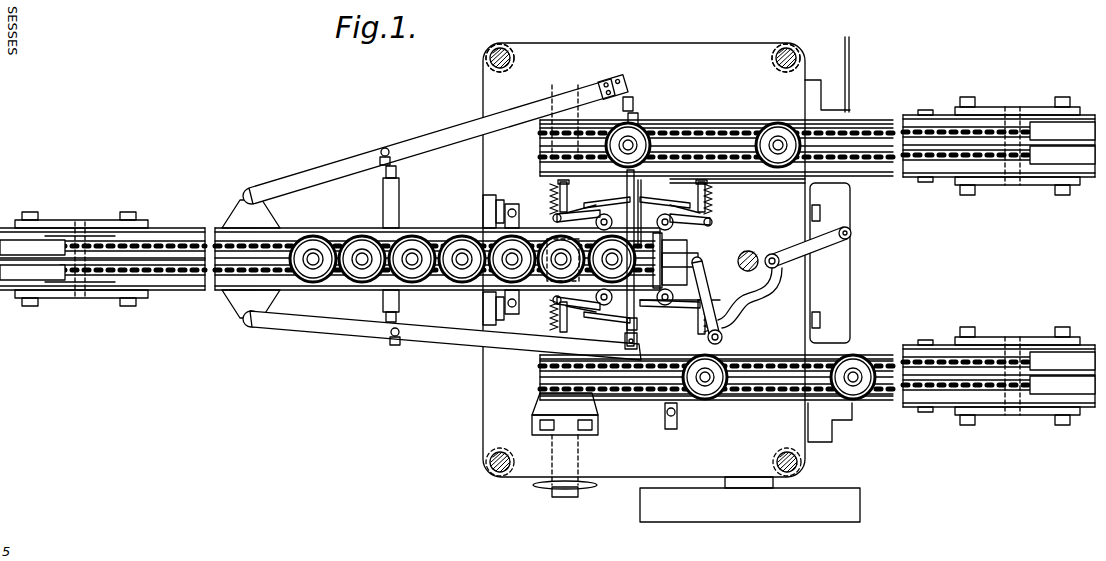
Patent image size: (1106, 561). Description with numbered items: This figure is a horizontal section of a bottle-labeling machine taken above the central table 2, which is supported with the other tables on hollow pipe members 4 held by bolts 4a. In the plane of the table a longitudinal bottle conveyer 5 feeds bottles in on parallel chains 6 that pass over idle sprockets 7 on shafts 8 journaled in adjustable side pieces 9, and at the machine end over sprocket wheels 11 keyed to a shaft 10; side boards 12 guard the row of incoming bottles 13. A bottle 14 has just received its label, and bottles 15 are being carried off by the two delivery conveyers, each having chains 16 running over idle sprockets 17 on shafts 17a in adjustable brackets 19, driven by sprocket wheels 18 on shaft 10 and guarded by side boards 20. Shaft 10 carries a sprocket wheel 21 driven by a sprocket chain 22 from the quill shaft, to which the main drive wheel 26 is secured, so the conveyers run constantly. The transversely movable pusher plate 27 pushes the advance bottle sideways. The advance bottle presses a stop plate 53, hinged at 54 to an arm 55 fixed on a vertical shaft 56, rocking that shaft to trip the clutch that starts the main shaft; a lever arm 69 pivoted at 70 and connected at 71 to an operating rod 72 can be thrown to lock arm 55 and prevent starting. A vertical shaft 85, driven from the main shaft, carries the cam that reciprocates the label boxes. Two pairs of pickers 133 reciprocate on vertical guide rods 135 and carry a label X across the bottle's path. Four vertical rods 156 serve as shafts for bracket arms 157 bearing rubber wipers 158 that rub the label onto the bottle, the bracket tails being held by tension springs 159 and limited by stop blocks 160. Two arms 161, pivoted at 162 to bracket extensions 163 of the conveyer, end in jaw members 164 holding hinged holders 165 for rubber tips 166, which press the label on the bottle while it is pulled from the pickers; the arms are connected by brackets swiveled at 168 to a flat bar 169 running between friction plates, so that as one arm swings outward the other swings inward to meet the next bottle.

The central table 2 is at (570, 43).
The hollow pipe member 4 is at (500, 47).
The bolt 4a is at (510, 48).
The bottle conveyer 5 is at (162, 278).
The conveyer chain 6 is at (183, 242).
The idle sprocket 7 is at (98, 276).
The shaft 8 is at (78, 288).
The side piece 9 is at (52, 222).
The shaft 10 is at (566, 94).
The sprocket wheel 11 is at (545, 278).
The side board 12 is at (300, 228).
The incoming bottle 13 is at (438, 278).
The labeled bottle 14 is at (643, 258).
The bottle being carried away 15 is at (772, 165).
The delivery conveyer chain 16 is at (876, 124).
The idle sprocket 17 is at (1008, 166).
The shaft 17a is at (1012, 115).
The sprocket wheel 18 is at (540, 135).
The adjustable bracket 19 is at (980, 107).
The side board 20 is at (920, 115).
The sprocket wheel 21 is at (546, 430).
The sprocket chain 22 is at (588, 430).
The main drive wheel 26 is at (750, 499).
The pusher plate 27 is at (649, 214).
The stop plate 53 is at (664, 250).
The hinge 54 is at (700, 258).
The arm 55 is at (712, 290).
The vertical shaft 56 is at (720, 334).
The lever arm 69 is at (790, 250).
The pivot 70 is at (774, 270).
The connection 71 is at (851, 234).
The operating rod 72 is at (849, 65).
The vertical shaft 85 is at (748, 251).
The picker 133 is at (641, 276).
The vertical guide rod 135 is at (617, 294).
The vertical rod 156 is at (652, 254).
The bracket arm 157 is at (724, 306).
The rubber wiper 158 is at (568, 340).
The tension spring 159 is at (552, 198).
The stop block 160 is at (560, 186).
The arm 161 is at (315, 172).
The pivot 162 is at (254, 182).
The bracket extension 163 is at (222, 318).
The jaw member 164 is at (620, 86).
The holder 165 is at (630, 102).
The rubber tip 166 is at (644, 110).
The swivel 168 is at (386, 148).
The flat bar 169 is at (399, 190).
The label X is at (645, 314).